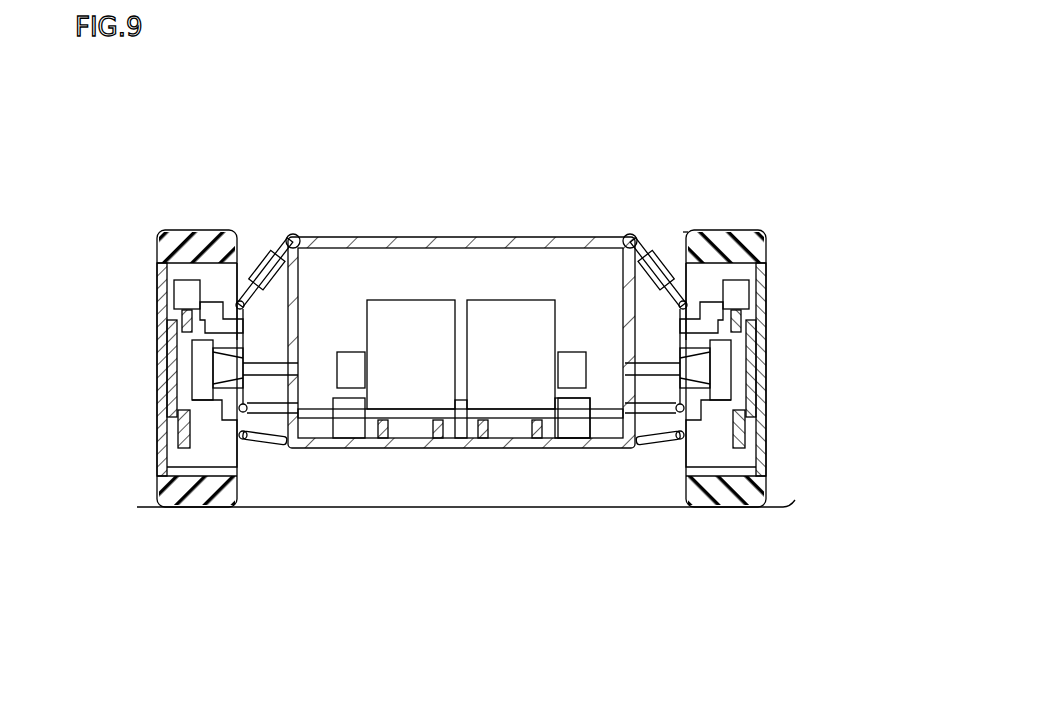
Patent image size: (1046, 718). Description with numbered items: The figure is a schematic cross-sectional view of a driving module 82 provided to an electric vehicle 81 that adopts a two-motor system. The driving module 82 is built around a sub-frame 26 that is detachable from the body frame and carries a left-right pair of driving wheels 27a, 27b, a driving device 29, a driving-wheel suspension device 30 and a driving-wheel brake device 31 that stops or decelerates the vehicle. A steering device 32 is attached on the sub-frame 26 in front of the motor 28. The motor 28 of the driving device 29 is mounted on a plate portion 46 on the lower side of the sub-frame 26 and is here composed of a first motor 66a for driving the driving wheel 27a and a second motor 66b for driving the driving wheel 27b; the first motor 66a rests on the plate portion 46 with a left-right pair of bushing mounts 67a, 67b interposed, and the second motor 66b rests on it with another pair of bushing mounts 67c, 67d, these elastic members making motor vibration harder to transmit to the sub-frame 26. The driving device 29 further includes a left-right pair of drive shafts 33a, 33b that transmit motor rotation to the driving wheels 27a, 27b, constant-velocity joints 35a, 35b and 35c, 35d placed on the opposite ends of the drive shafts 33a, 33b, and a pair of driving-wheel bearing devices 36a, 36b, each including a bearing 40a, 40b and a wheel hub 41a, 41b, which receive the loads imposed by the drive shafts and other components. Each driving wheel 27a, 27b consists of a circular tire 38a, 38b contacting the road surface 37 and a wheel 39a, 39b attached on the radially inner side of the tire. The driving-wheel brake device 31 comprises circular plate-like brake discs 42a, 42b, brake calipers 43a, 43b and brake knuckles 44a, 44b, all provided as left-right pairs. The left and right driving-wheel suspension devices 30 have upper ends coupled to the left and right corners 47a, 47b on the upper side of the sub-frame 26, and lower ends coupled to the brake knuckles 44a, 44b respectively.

The electric vehicle 81 is at (669, 106).
The driving module 82 is at (585, 172).
The sub-frame 26 is at (685, 232).
The driving wheel 27a is at (134, 368).
The driving wheel 27b is at (786, 368).
The motor 28 is at (461, 443).
The driving device 29 is at (459, 382).
The driving-wheel suspension device 30 is at (272, 262).
The driving-wheel brake device 31 is at (460, 348).
The steering device 32 is at (567, 425).
The drive shaft 33a is at (262, 392).
The drive shaft 33b is at (640, 388).
The constant-velocity joint 35a is at (265, 377).
The constant-velocity joint 35b is at (345, 362).
The constant-velocity joint 35c is at (600, 378).
The constant-velocity joint 35d is at (572, 355).
The driving-wheel bearing device 36a is at (234, 481).
The driving-wheel bearing device 36b is at (659, 481).
The road surface 37 is at (480, 493).
The tire 38a is at (160, 487).
The tire 38b is at (763, 487).
The wheel 39a is at (183, 432).
The wheel 39b is at (740, 432).
The bearing 40a is at (205, 382).
The bearing 40b is at (690, 382).
The wheel hub 41a is at (188, 378).
The wheel hub 41b is at (722, 378).
The brake disc 42a is at (137, 363).
The brake disc 42b is at (783, 363).
The brake caliper 43a is at (185, 297).
The brake caliper 43b is at (738, 297).
The brake knuckle 44a is at (210, 326).
The brake knuckle 44b is at (713, 326).
The plate portion 46 is at (353, 408).
The corner 47a is at (308, 238).
The corner 47b is at (613, 238).
The first motor 66a is at (420, 390).
The second motor 66b is at (510, 385).
The bushing mount 67a is at (383, 420).
The bushing mount 67b is at (438, 420).
The bushing mount 67c is at (483, 420).
The bushing mount 67d is at (537, 420).